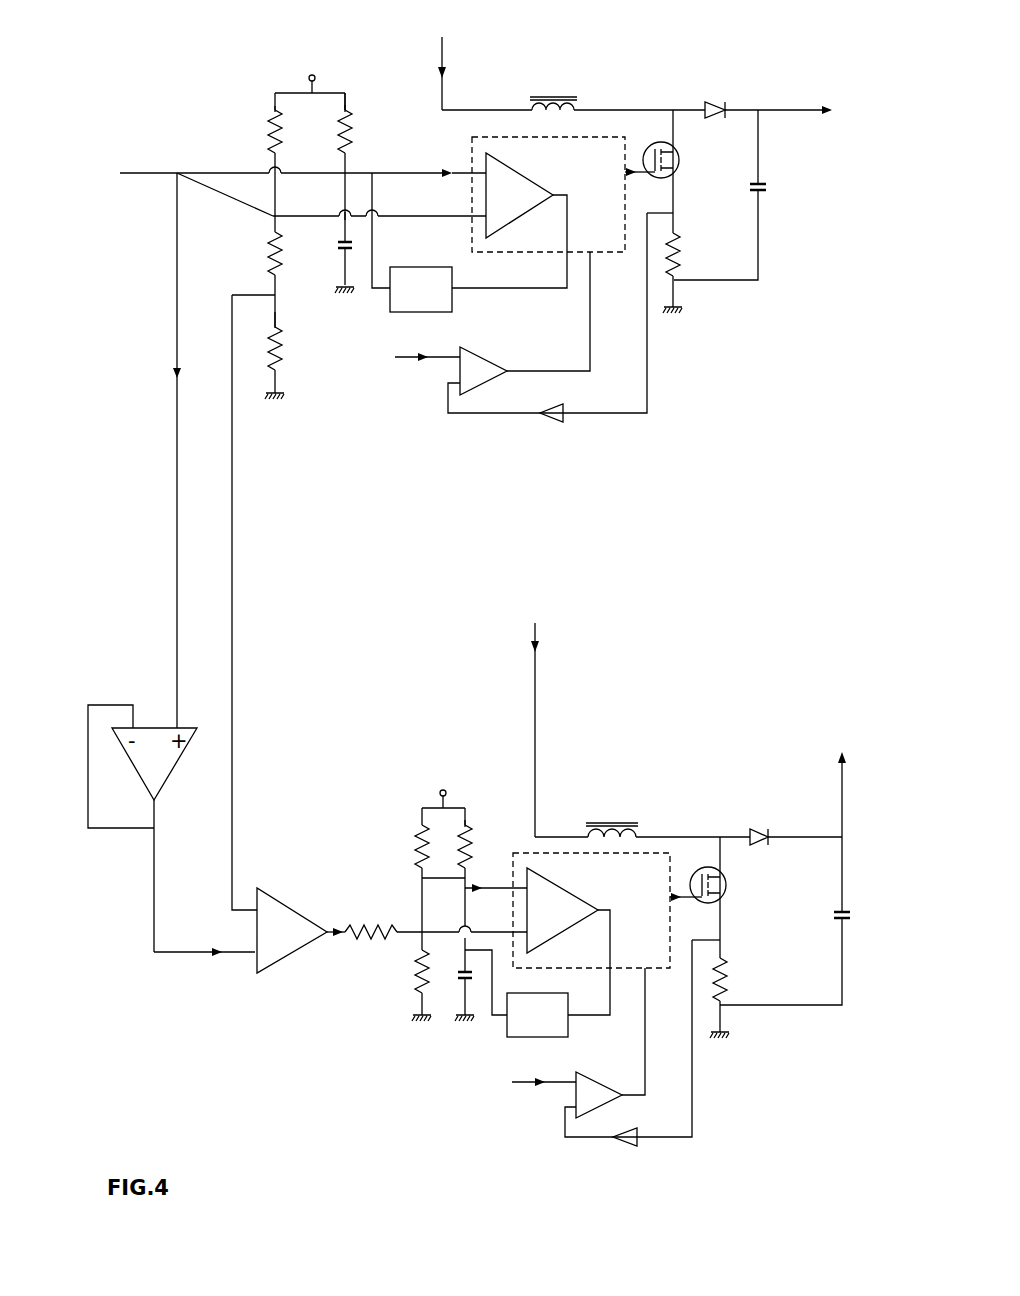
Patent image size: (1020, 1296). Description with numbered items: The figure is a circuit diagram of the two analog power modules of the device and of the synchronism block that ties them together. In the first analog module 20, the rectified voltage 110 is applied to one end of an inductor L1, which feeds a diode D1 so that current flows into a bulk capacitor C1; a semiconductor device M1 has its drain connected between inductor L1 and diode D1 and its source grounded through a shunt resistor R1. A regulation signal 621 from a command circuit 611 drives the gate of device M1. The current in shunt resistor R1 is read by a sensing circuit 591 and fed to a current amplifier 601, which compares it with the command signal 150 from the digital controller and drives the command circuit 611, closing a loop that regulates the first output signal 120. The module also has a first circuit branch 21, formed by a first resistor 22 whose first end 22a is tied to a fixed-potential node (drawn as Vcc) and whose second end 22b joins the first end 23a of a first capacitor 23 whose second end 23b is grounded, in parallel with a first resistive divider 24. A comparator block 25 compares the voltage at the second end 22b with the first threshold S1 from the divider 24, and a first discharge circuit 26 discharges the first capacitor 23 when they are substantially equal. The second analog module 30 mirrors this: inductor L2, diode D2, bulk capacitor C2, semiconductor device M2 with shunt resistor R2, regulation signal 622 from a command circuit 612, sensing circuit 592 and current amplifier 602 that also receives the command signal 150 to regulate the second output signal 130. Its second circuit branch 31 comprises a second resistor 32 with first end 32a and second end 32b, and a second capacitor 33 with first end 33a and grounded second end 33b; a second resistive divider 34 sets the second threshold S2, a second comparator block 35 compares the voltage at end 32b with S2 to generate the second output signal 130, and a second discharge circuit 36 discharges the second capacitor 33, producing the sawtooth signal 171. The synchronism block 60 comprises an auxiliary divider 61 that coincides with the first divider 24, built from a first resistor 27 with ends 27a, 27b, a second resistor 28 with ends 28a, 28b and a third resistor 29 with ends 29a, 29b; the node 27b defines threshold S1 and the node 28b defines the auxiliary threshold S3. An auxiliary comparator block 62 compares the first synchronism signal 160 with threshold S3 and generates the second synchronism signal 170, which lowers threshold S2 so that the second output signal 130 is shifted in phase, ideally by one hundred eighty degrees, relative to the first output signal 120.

The first analog module 20 is at (720, 374).
The first circuit branch 21 is at (348, 84).
The first resistor 22 is at (352, 137).
The first end of first resistor 22a is at (349, 107).
The second end of first resistor 22b is at (347, 162).
The first capacitor 23 is at (357, 246).
The first end of first capacitor 23a is at (345, 217).
The second end of first capacitor 23b is at (332, 263).
The first resistive divider 24 is at (272, 84).
The comparator block 25 is at (527, 170).
The first discharge circuit 26 is at (412, 242).
The first resistor of first divider 27 is at (270, 130).
The first end of resistor 27 27a is at (272, 100).
The second end of resistor 27 27b is at (270, 162).
The second resistor of first divider 28 is at (270, 254).
The first end of resistor 28 28a is at (270, 221).
The second end of resistor 28 28b is at (272, 278).
The third resistor of first divider 29 is at (278, 345).
The first end of resistor 29 29a is at (276, 316).
The second end of resistor 29 29b is at (277, 378).
The second analog module 30 is at (693, 670).
The second circuit branch 31 is at (463, 798).
The second resistor 32 is at (473, 852).
The first end of second resistor 32a is at (467, 823).
The second end of second resistor 32b is at (422, 878).
The second capacitor 33 is at (476, 975).
The first end of second capacitor 33a is at (462, 925).
The second end of second capacitor 33b is at (462, 993).
The second resistive divider 34 is at (398, 822).
The second comparator block 35 is at (566, 885).
The second discharge circuit 36 is at (537, 1015).
The synchronism block 60 is at (156, 514).
The auxiliary divider 61 is at (302, 409).
The auxiliary comparator block 62 is at (262, 975).
The rectified voltage 110 is at (470, 58).
The first output signal 120 is at (813, 88).
The second output signal 130 is at (842, 752).
The command signal 150 is at (428, 362).
The first synchronism signal 160 is at (172, 378).
The second synchronism signal 170 is at (333, 934).
The sawtooth-patterned auxiliary signal 171 is at (493, 889).
The sensing circuit 591 is at (548, 420).
The sensing circuit 592 is at (618, 1142).
The current amplifier 601 is at (485, 350).
The current amplifier 602 is at (604, 1078).
The command circuit 611 is at (500, 137).
The second command circuit 612 is at (548, 855).
The regulation signal 621 is at (632, 168).
The regulation signal 622 is at (685, 902).
The first threshold voltage value S1 is at (267, 187).
The second threshold value S2 is at (420, 933).
The auxiliary threshold value S3 is at (273, 297).
The supply voltage Vcc is at (312, 75).
The inductor L1 is at (577, 108).
The inductor L2 is at (638, 832).
The diode D1 is at (716, 105).
The diode D2 is at (770, 832).
The semiconductor device M1 is at (680, 160).
The semiconductor device M2 is at (725, 884).
The bulk capacitor C1 is at (770, 185).
The bulk capacitor C2 is at (800, 918).
The shunt resistor R1 is at (683, 252).
The shunt resistor R2 is at (725, 990).